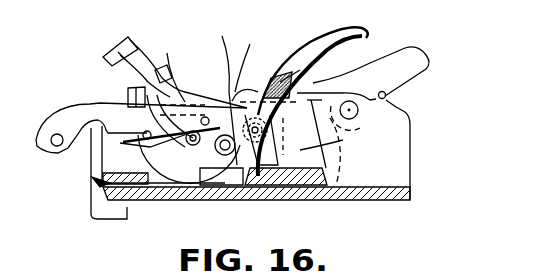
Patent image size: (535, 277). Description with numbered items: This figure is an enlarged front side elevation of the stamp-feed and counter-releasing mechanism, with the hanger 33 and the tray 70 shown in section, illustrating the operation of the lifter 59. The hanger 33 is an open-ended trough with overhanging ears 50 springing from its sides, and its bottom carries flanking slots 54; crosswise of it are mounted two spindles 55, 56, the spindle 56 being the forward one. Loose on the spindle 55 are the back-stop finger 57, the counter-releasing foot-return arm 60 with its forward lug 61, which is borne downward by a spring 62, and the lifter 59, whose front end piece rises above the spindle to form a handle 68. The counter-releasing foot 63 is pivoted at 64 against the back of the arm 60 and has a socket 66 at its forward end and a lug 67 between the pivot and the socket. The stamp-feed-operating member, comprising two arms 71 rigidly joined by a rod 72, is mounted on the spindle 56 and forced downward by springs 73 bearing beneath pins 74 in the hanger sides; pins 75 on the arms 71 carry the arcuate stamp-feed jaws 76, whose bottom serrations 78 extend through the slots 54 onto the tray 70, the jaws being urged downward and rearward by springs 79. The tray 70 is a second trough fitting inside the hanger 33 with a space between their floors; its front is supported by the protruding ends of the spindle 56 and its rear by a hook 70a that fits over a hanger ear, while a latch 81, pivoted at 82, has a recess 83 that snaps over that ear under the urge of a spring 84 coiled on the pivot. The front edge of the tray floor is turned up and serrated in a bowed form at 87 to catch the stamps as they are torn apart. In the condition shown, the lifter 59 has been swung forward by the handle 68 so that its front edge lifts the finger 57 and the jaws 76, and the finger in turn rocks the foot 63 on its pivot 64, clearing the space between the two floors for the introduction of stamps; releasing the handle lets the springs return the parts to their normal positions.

The hanger 33 is at (310, 106).
The overhanging ears 50 is at (97, 205).
The flanking slots 54 is at (193, 200).
The spindle 55 is at (335, 151).
The spindle 56 is at (195, 130).
The back-stop finger 57 is at (267, 200).
The lifter 59 is at (287, 200).
The counter-releasing foot-return arm 60 is at (206, 117).
The lug 61 is at (132, 88).
The spring 62 is at (247, 100).
The counter-releasing foot 63 is at (161, 66).
The pivot 64 is at (221, 90).
The socket 66 is at (128, 37).
The lug 67 is at (182, 103).
The handle 68 is at (316, 44).
The tray 70 is at (353, 124).
The hook 70a is at (366, 58).
The arms 71 is at (72, 108).
The rod 72 is at (56, 148).
The springs 73 is at (140, 200).
The pins 74 is at (120, 105).
The pins 75 is at (251, 60).
The stamp-feed jaws 76 is at (167, 53).
The serrations 78 is at (237, 200).
The springs 79 is at (257, 198).
The latch 81 is at (355, 57).
The pivot 82 is at (360, 117).
The recess 83 is at (291, 61).
The spring 84 is at (387, 95).
The serrated edge 87 is at (92, 150).